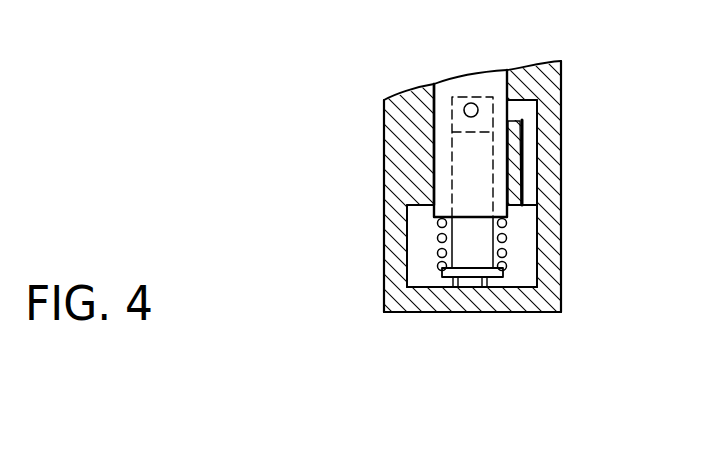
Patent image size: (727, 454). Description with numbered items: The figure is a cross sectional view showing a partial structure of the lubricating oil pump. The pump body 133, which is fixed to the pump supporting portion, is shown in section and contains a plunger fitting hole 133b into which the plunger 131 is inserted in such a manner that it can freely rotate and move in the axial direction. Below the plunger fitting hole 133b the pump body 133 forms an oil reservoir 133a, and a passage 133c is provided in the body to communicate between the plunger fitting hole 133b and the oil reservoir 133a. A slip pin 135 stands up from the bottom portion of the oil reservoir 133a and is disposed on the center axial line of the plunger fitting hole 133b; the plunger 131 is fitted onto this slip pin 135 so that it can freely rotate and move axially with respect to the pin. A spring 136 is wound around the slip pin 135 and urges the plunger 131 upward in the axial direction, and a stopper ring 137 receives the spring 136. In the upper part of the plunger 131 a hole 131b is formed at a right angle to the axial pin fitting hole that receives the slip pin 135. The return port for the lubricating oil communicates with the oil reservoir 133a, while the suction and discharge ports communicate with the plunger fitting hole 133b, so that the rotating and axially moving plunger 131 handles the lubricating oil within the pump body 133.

The plunger 131 is at (445, 90).
The hole 131b is at (472, 103).
The pump body 133 is at (384, 207).
The oil reservoir 133a is at (523, 248).
The plunger fitting hole 133b is at (433, 150).
The passage 133c is at (527, 130).
The slip pin 135 is at (468, 250).
The spring 136 is at (438, 254).
The stopper ring 137 is at (500, 311).